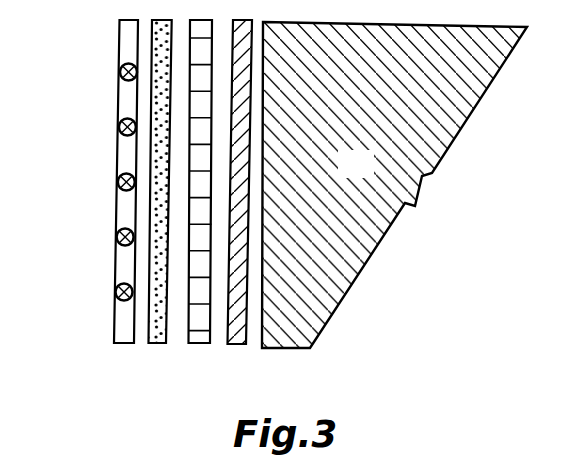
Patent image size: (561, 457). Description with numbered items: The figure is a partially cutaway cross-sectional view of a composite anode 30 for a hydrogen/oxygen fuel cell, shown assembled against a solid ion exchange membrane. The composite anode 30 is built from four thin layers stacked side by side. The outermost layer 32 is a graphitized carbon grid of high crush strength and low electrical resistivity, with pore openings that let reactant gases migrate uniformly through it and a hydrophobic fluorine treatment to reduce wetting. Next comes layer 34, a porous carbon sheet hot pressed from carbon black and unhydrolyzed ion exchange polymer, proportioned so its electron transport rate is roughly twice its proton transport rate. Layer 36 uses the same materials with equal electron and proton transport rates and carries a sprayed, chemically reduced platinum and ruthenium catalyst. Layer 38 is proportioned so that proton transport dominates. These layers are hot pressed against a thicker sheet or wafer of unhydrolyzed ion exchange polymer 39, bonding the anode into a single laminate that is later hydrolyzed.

The composite anode 30 is at (100, 217).
The carbon grid layer 32 is at (121, 330).
The porous carbon sheet layer 34 is at (157, 343).
The intermediate catalyst layer 36 is at (198, 342).
The proton-conducting layer 38 is at (237, 328).
The unhydrolyzed ion exchange polymer sheet 39 is at (371, 176).